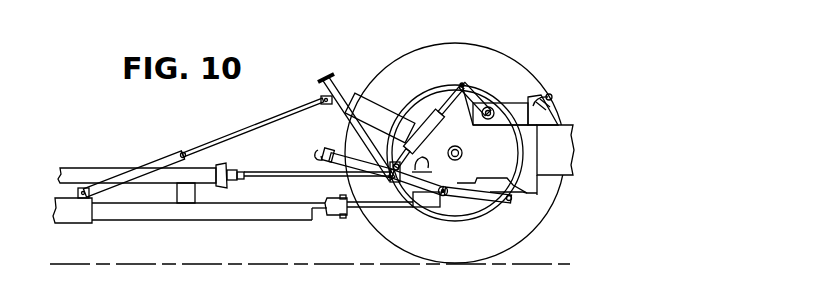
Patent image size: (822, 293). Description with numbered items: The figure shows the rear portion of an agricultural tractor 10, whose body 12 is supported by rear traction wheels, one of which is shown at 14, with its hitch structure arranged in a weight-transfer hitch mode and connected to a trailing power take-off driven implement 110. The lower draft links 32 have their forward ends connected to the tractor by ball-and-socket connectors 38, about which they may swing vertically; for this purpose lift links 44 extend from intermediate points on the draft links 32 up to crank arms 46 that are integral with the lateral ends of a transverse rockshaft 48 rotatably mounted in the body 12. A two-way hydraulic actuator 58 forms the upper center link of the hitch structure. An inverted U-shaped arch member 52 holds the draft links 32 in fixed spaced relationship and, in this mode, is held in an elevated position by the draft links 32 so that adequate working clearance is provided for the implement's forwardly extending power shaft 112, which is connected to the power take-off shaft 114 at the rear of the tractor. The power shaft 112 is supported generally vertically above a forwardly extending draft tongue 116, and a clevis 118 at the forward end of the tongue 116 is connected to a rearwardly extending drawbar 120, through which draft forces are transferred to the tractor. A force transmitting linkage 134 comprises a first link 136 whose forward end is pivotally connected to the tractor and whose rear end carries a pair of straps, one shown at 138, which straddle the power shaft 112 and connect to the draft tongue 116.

The agricultural tractor 10 is at (523, 60).
The body 12 is at (573, 147).
The rear traction wheel 14 is at (442, 43).
The draft links 32 is at (380, 172).
The ball-and-socket connectors 38 is at (444, 196).
The lift links 44 is at (445, 117).
The crank arm 46 is at (474, 97).
The rockshaft 48 is at (488, 119).
The arch member 52 is at (345, 122).
The two-way hydraulic actuator 58 is at (380, 113).
The implement 110 is at (209, 132).
The power shaft 112 is at (272, 164).
The power take-off shaft 114 is at (428, 167).
The draft tongue 116 is at (190, 221).
The clevis 118 is at (332, 215).
The drawbar 120 is at (375, 207).
The force transmitting linkage 134 is at (275, 116).
The first link 136 is at (235, 133).
The strap 138 is at (157, 164).